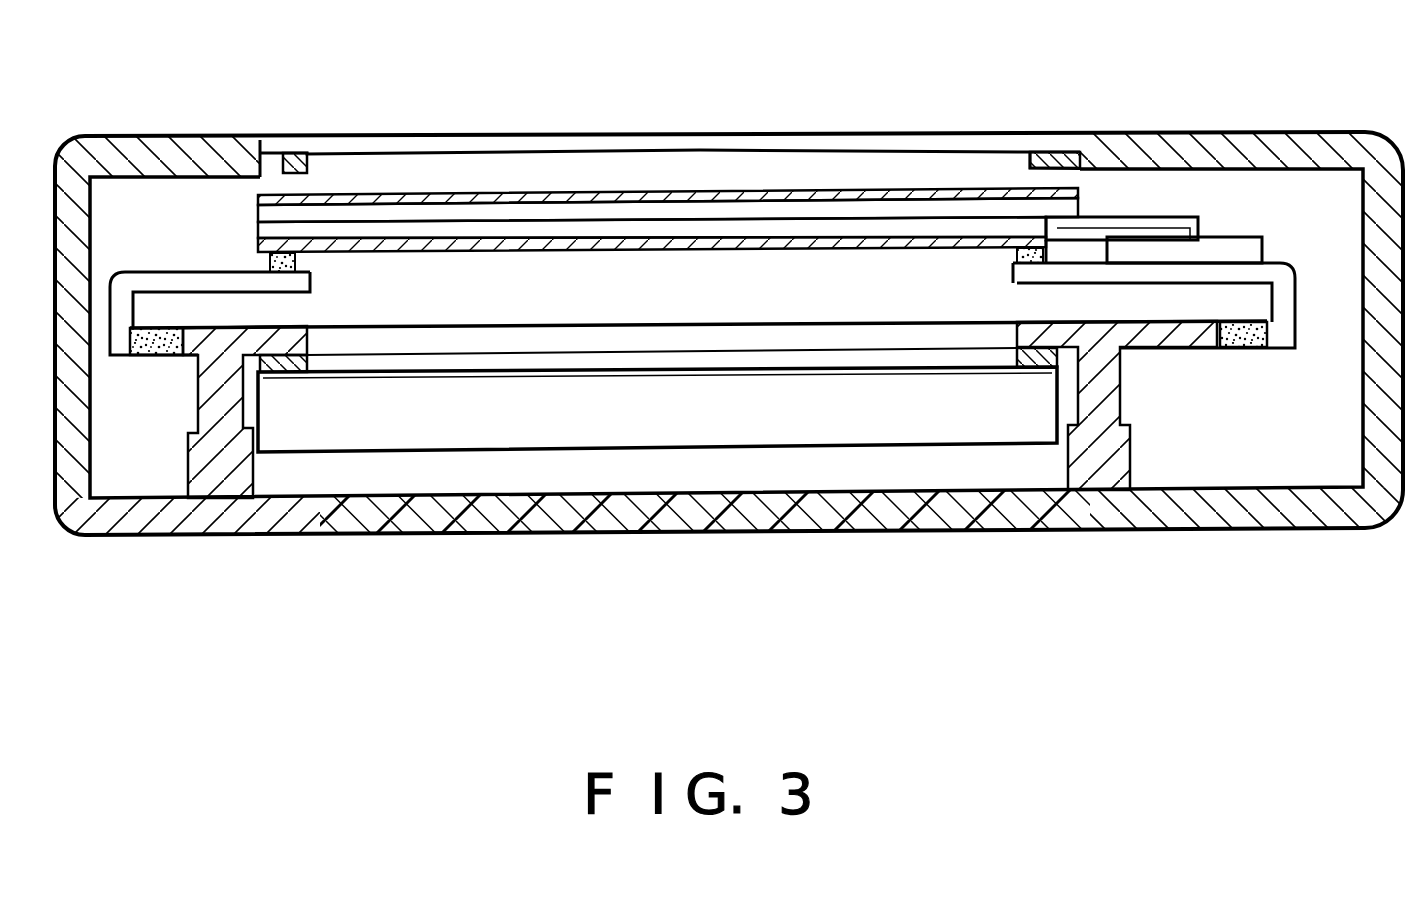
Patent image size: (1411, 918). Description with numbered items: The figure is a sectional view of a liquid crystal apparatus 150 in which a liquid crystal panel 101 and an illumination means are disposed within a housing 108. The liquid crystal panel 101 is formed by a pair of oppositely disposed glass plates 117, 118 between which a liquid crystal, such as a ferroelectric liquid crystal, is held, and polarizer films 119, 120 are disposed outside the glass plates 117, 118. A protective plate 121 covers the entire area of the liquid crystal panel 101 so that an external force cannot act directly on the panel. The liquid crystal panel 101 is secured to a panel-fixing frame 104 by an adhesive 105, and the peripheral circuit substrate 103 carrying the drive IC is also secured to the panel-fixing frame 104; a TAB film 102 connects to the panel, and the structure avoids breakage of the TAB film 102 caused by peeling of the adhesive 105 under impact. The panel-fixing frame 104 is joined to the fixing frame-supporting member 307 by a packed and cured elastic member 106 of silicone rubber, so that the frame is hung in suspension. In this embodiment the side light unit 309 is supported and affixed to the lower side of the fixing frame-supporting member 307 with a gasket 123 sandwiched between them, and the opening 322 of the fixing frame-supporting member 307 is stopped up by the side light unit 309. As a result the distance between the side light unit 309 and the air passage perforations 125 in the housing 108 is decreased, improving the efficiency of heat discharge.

The liquid crystal apparatus 150 is at (968, 112).
The protective plate 121 is at (371, 136).
The liquid crystal panel 101 is at (668, 160).
The polarizer film 119 is at (549, 192).
The glass plate 117 is at (733, 207).
The glass plate 118 is at (828, 228).
The polarizer film 120 is at (636, 236).
The adhesive 105 is at (288, 252).
The panel-fixing frame 104 is at (177, 280).
The elastic member 106 is at (147, 357).
The fixing frame-supporting member 307 is at (227, 343).
The gasket 123 is at (290, 365).
The opening 322 is at (485, 335).
The air passage perforations 125 is at (721, 505).
The side light unit 309 is at (985, 420).
The housing 108 is at (1105, 468).
The TAB film 102 is at (1143, 216).
The peripheral circuit substrate 103 is at (1238, 252).